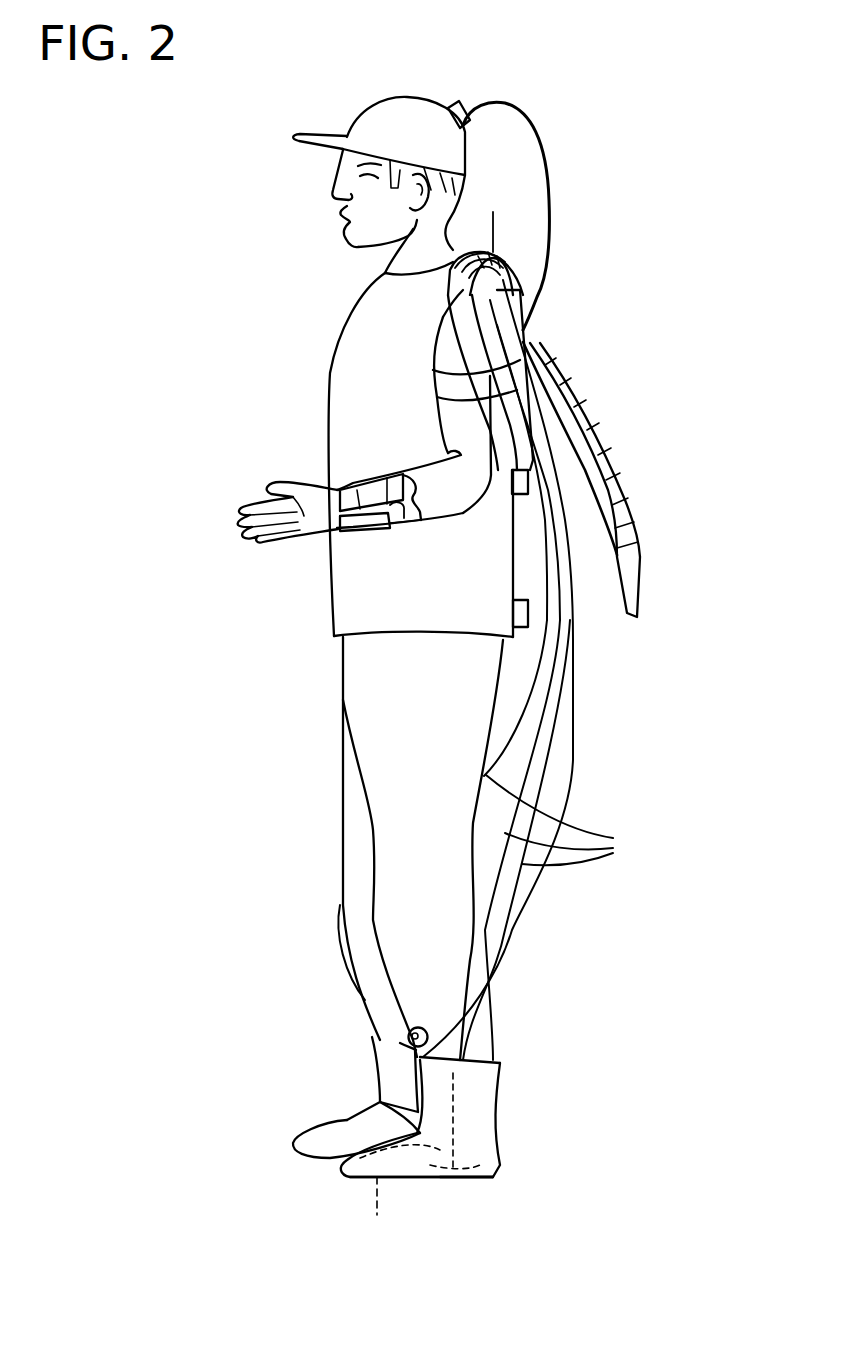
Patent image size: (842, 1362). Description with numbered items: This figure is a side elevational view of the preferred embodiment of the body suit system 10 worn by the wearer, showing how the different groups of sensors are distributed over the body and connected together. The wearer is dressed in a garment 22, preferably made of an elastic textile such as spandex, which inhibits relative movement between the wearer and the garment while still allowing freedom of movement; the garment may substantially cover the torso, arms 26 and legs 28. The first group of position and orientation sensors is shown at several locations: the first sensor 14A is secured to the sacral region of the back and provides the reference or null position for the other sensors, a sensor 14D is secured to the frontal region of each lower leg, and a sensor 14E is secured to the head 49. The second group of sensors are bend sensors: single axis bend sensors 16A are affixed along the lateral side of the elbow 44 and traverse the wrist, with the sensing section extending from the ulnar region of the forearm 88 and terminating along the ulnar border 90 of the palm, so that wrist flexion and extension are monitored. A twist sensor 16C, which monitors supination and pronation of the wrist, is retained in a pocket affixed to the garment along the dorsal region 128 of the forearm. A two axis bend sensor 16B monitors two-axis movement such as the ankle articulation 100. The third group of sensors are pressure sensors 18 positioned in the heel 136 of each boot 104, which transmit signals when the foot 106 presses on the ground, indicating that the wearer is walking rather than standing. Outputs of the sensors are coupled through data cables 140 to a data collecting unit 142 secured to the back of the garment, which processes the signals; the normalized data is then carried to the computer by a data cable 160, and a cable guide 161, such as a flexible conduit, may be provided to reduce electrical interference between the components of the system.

The body suit system 10 is at (222, 752).
The first sensor 14A is at (527, 627).
The sensor 14D is at (428, 1026).
The sensor 14E is at (461, 104).
The single axis bend sensor 16A is at (367, 523).
The two axis bend sensor 16B is at (380, 1100).
The twist sensor 16C is at (357, 490).
The pressure sensor 18 is at (460, 1165).
The garment 22 is at (330, 376).
The arms 26 is at (443, 342).
The legs 28 is at (357, 823).
The elbow 44 is at (516, 496).
The head 49 is at (412, 117).
The forearm 88 is at (367, 507).
The ulnar border 90 is at (304, 516).
The ankle articulation 100 is at (450, 1105).
The boot 104 is at (300, 1127).
The foot 106 is at (371, 1212).
The dorsal region 128 is at (413, 520).
The heel 136 is at (493, 1177).
The data cables 140 is at (462, 256).
The data collecting unit 142 is at (517, 357).
The data cable 160 is at (640, 594).
The cable guide 161 is at (620, 507).